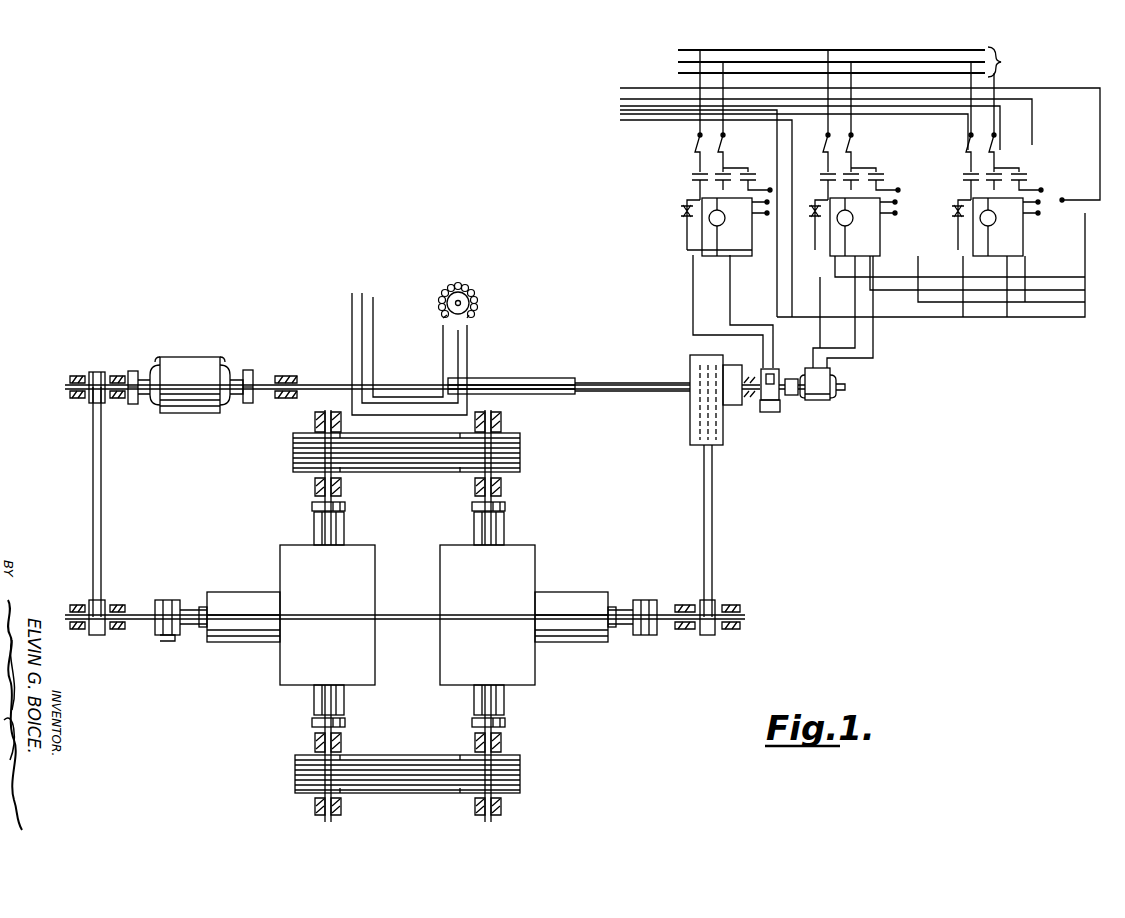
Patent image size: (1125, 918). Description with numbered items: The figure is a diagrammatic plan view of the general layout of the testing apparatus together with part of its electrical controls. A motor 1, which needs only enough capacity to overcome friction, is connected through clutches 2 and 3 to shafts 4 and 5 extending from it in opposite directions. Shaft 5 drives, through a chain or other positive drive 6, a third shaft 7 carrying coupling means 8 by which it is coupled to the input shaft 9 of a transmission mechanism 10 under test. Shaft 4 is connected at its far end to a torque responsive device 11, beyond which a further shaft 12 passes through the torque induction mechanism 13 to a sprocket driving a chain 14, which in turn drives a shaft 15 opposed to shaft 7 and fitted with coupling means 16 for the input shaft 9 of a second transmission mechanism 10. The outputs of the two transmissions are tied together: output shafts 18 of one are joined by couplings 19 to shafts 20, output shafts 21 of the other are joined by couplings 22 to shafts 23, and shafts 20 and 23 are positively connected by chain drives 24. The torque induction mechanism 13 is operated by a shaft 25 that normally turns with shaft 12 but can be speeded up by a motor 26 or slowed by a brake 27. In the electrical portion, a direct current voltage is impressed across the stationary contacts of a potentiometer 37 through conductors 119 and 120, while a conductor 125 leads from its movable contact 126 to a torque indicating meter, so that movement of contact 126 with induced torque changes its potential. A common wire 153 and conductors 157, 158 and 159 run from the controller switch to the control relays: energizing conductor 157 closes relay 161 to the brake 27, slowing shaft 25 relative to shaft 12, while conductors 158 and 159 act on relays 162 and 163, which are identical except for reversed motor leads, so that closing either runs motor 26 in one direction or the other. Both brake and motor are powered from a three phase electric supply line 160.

The motor 1 is at (185, 360).
The clutch 2 is at (250, 374).
The clutch 3 is at (120, 362).
The shaft 4 is at (312, 386).
The shaft 5 is at (113, 362).
The chain drive 6 is at (105, 510).
The third shaft 7 is at (135, 610).
The coupling means 8 is at (168, 600).
The input shaft 9 is at (193, 605).
The transmission mechanism 10 is at (292, 598).
The torque responsive device 11 is at (520, 376).
The shaft 12 is at (622, 384).
The torque induction mechanism 13 is at (730, 405).
The chain 14 is at (715, 525).
The shaft 15 is at (680, 605).
The coupling means 16 is at (648, 635).
The output shafts 18 is at (314, 518).
The couplings 19 is at (310, 508).
The shafts 20 is at (312, 490).
The output shafts 21 is at (504, 520).
The couplings 22 is at (505, 506).
The shafts 23 is at (500, 483).
The chain drives 24 is at (400, 472).
The shaft 25 is at (750, 410).
The motor 26 is at (822, 400).
The brake 27 is at (783, 398).
The potentiometer 37 is at (462, 287).
The conductor 119 is at (373, 305).
The conductor 120 is at (350, 303).
The conductor 125 is at (362, 293).
The movable contact 126 is at (462, 303).
The common wire 153 is at (640, 120).
The conductor 157 is at (622, 110).
The conductor 158 is at (622, 99).
The conductor 159 is at (650, 98).
The electric supply line 160 is at (856, 62).
The relay 161 is at (690, 228).
The relay 162 is at (835, 222).
The relay 163 is at (975, 222).